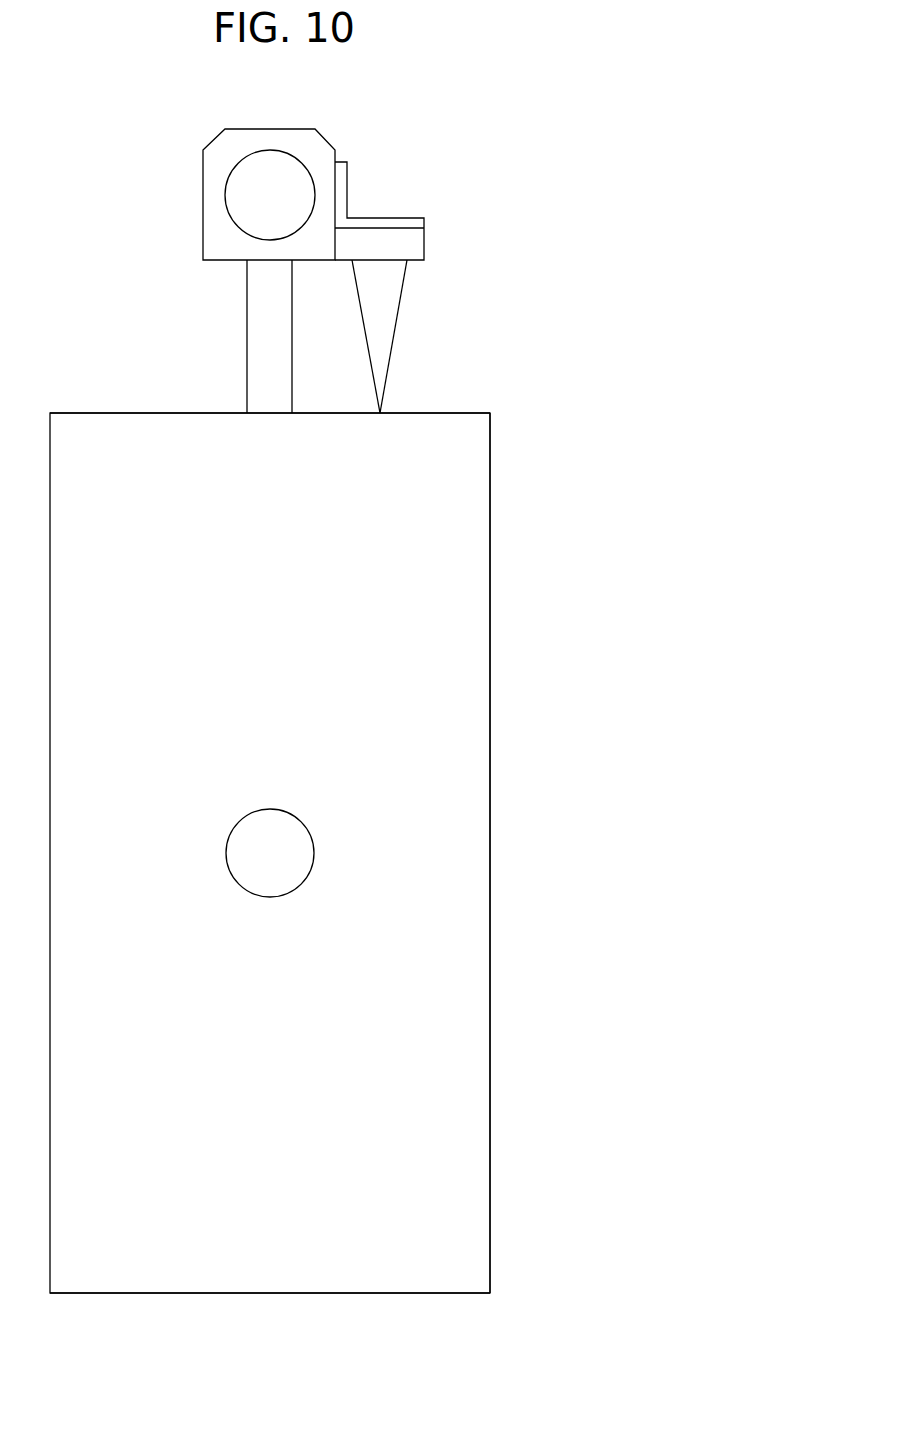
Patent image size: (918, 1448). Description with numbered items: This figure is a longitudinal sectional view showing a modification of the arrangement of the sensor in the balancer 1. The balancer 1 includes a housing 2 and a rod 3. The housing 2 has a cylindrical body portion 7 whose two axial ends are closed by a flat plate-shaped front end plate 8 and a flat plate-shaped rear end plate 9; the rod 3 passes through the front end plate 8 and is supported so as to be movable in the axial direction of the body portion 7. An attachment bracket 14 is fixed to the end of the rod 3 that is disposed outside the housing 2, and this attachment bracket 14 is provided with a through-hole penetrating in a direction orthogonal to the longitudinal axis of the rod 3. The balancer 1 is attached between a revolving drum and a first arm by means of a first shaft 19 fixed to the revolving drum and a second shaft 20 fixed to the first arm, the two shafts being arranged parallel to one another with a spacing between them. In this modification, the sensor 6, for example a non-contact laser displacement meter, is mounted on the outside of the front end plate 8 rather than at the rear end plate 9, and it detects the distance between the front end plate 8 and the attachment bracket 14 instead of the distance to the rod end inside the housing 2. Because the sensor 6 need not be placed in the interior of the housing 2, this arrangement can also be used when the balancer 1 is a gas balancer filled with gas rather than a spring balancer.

The balancer 1 is at (650, 220).
The housing 2 is at (505, 557).
The rod 3 is at (247, 333).
The sensor 6 is at (424, 242).
The body portion 7 is at (490, 663).
The front end plate 8 is at (72, 413).
The rear end plate 9 is at (315, 1293).
The attachment bracket 14 is at (190, 193).
The first shaft 19 is at (265, 795).
The second shaft 20 is at (315, 150).